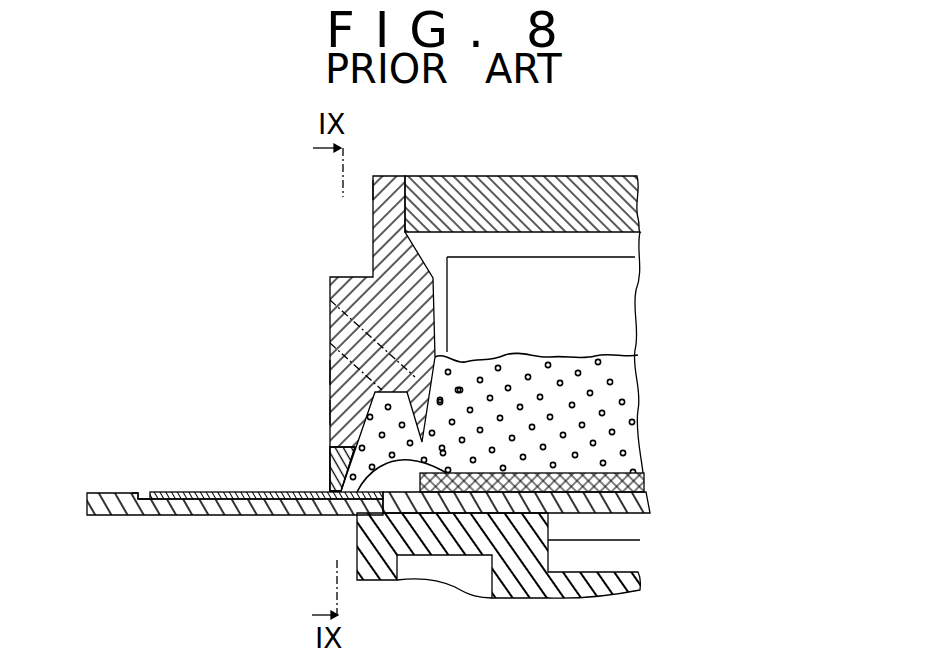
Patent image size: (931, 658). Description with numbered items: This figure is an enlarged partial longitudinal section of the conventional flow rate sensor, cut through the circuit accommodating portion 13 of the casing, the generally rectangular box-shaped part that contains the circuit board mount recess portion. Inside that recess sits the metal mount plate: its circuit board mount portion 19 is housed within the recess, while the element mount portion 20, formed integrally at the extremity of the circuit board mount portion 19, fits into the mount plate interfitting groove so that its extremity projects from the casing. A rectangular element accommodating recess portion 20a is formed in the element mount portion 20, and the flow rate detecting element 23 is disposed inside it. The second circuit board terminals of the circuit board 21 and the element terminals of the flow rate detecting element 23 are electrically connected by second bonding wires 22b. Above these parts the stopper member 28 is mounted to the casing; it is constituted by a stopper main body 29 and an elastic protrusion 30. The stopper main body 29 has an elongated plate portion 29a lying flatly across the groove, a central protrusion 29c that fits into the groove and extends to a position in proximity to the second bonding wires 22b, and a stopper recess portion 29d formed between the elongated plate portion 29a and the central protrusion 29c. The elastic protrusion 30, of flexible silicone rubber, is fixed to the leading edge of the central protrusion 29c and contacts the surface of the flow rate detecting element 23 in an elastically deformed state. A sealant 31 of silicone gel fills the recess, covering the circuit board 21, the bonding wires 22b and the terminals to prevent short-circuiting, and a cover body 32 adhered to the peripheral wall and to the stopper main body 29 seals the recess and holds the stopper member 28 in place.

The circuit accommodating portion 13 is at (550, 588).
The circuit board mount portion 19 is at (648, 495).
The element mount portion 20 is at (116, 510).
The element accommodating recess portion 20a is at (143, 497).
The circuit board 21 is at (646, 485).
The second bonding wires 22b is at (330, 413).
The flow rate detecting element 23 is at (178, 493).
The stopper member 28 is at (373, 205).
The stopper main body 29 is at (370, 232).
The elongated plate portion 29a is at (330, 300).
The central protrusion 29c is at (330, 372).
The stopper recess portion 29d is at (330, 343).
The elastic protrusion 30 is at (330, 457).
The sealant 31 is at (632, 394).
The cover body 32 is at (532, 192).